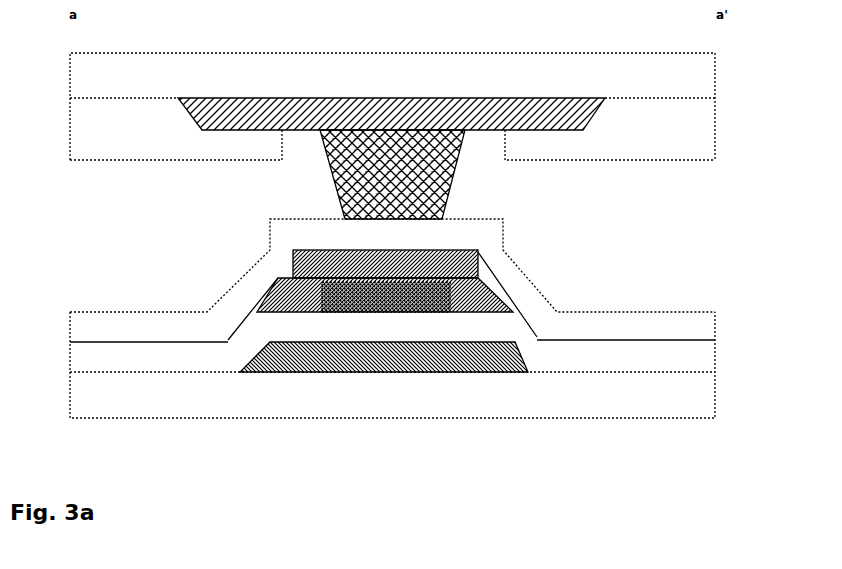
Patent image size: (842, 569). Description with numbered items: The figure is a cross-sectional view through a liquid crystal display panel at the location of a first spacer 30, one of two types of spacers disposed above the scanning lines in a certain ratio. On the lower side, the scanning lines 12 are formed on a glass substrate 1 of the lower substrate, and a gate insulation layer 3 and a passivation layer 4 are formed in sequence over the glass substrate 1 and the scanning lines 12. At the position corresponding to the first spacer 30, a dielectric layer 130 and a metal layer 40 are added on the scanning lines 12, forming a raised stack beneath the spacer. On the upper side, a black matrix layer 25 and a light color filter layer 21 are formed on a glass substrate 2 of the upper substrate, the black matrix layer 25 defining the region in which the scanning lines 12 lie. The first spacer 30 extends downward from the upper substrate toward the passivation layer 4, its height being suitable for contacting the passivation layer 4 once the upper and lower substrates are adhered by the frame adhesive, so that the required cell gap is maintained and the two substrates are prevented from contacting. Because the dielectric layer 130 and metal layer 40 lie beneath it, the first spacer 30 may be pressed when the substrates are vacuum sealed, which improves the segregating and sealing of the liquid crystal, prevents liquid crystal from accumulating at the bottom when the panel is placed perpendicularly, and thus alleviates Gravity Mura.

The glass substrate 1 is at (697, 398).
The glass substrate 2 is at (688, 72).
The gate insulation layer 3 is at (697, 355).
The passivation layer 4 is at (697, 320).
The scanning lines 12 is at (385, 372).
The light color filter layer 21 is at (93, 132).
The black matrix layer 25 is at (388, 110).
The first spacer 30 is at (452, 185).
The metal layer 40 is at (508, 258).
The dielectric layer 130 is at (502, 290).